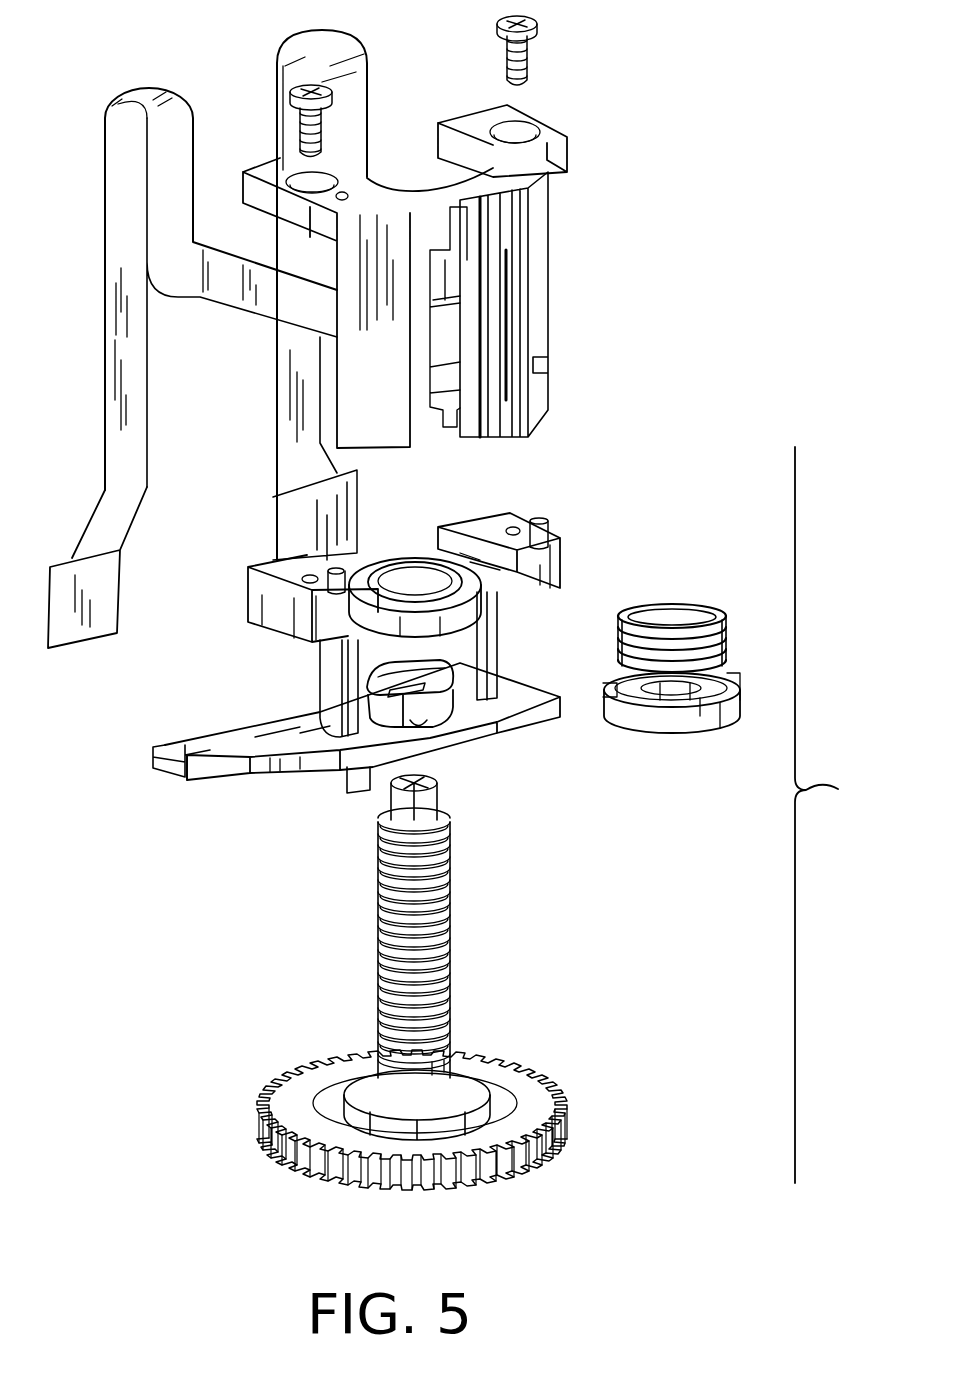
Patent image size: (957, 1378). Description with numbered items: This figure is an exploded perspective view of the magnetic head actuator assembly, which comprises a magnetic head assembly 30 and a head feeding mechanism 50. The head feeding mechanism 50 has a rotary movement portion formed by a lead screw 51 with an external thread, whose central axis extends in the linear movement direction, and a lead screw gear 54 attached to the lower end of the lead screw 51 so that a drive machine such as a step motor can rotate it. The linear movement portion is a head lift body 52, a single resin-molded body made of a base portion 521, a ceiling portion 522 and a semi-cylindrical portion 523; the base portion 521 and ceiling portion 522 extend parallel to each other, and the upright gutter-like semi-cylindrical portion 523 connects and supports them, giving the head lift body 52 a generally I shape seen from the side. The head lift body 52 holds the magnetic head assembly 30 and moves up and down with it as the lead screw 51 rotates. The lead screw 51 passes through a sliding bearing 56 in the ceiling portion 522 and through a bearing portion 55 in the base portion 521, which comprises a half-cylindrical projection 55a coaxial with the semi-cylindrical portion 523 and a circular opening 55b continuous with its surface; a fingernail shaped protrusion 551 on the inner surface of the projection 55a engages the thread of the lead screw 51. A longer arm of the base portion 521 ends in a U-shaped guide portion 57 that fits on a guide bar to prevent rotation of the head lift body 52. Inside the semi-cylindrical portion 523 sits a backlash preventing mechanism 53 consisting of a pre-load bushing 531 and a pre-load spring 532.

The magnetic head assembly 30 is at (598, 200).
The head feeding mechanism 50 is at (834, 815).
The lead screw 51 is at (455, 923).
The head lift body 52 is at (398, 644).
The base portion 521 is at (354, 757).
The ceiling portion 522 is at (355, 557).
The semi-cylindrical portion 523 is at (318, 684).
The backlash preventing mechanism 53 is at (676, 691).
The pre-load bushing 531 is at (655, 738).
The pre-load spring 532 is at (667, 606).
The lead screw gear 54 is at (530, 1073).
The bearing portion 55 is at (446, 731).
The fingernail shaped protrusion 551 is at (402, 683).
The half-cylindrical projection 55a is at (432, 673).
The circular opening 55b is at (423, 723).
The plain or sliding bearing 56 is at (412, 563).
The guide portion 57 is at (175, 775).